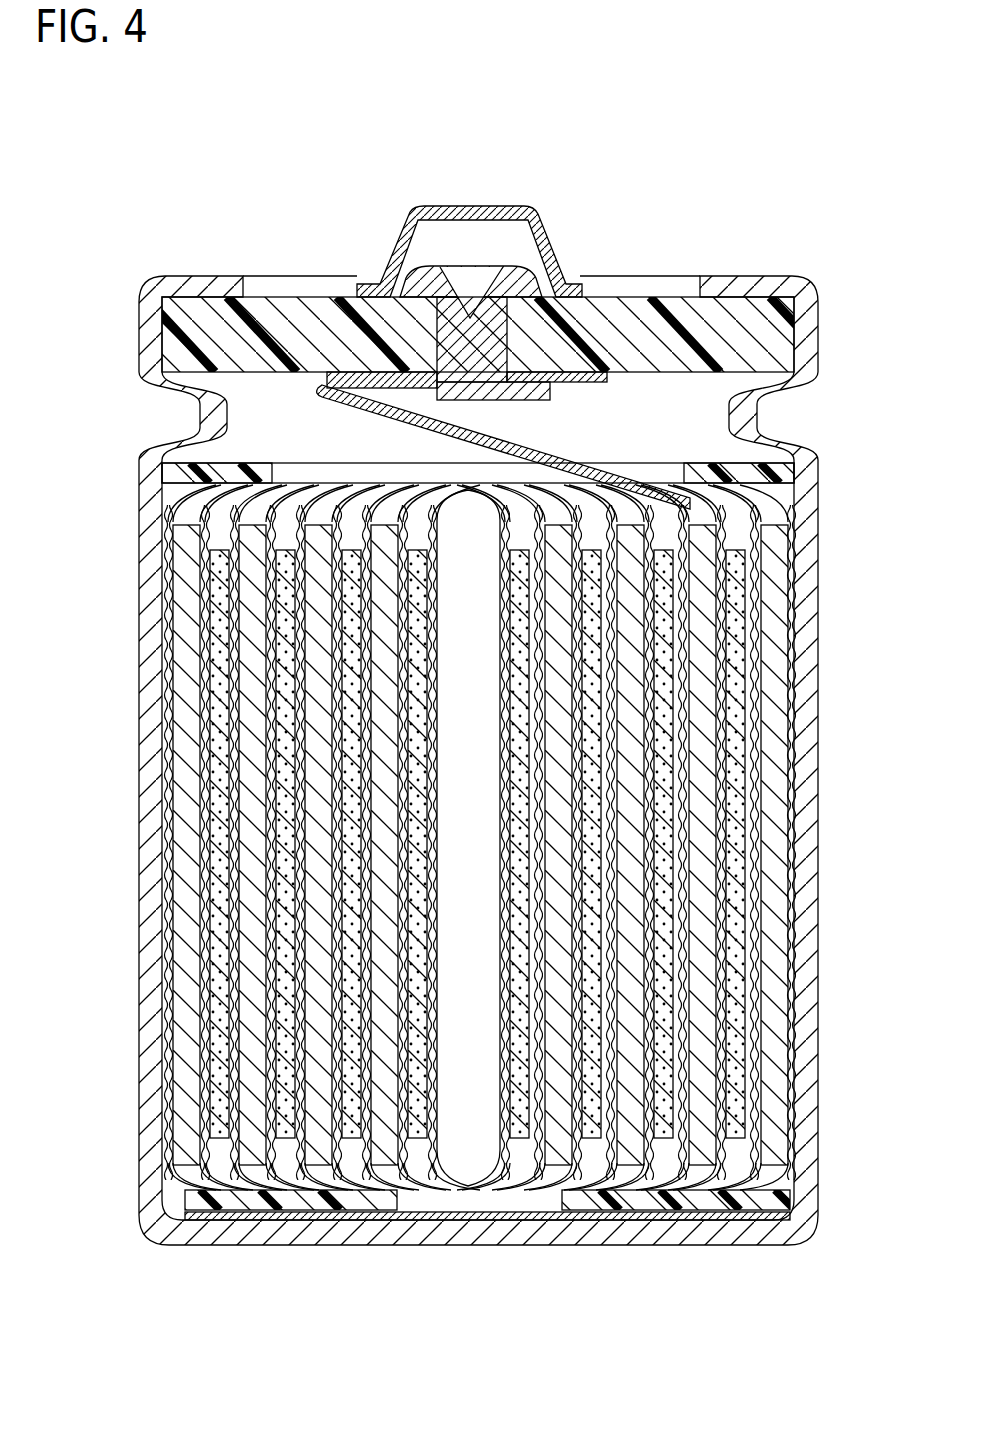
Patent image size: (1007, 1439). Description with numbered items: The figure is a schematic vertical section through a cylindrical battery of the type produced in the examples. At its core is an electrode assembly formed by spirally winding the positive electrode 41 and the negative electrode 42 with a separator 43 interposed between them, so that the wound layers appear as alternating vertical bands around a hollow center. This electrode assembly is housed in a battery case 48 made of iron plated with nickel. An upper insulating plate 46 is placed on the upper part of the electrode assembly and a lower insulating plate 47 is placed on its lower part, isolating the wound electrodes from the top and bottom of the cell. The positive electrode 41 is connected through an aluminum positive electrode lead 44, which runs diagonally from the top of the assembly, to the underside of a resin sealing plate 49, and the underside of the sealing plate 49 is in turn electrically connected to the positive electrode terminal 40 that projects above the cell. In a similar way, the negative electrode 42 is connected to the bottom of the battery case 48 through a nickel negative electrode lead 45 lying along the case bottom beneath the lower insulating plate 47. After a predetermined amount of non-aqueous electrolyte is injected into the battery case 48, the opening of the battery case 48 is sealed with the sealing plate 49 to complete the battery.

The positive electrode terminal 40 is at (470, 208).
The positive electrode 41 is at (733, 909).
The negative electrode 42 is at (770, 809).
The separator 43 is at (784, 717).
The positive electrode lead 44 is at (512, 447).
The negative electrode lead 45 is at (468, 1220).
The upper insulating plate 46 is at (780, 472).
The lower insulating plate 47 is at (775, 1200).
The battery case 48 is at (148, 709).
The sealing plate 49 is at (185, 325).